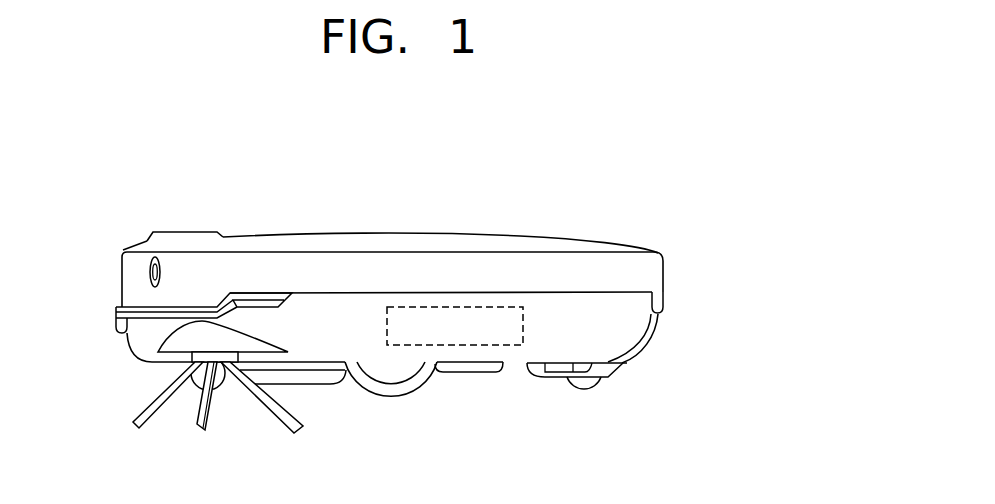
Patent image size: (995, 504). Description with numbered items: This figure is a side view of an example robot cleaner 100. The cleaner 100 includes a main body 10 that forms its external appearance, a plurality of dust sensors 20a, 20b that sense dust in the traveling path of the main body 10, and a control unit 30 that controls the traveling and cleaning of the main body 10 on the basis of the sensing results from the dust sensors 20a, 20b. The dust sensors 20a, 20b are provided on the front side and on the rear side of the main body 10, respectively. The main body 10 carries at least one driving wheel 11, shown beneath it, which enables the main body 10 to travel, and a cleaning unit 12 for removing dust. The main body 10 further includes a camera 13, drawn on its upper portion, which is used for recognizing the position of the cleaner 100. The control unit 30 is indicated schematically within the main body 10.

The cleaner 100 is at (650, 207).
The main body 10 is at (395, 233).
The driving wheel 11 is at (390, 386).
The cleaning unit 12 is at (150, 403).
The camera 13 is at (186, 232).
The dust sensor 20a is at (115, 323).
The dust sensor 20b is at (665, 303).
The control unit 30 is at (454, 346).